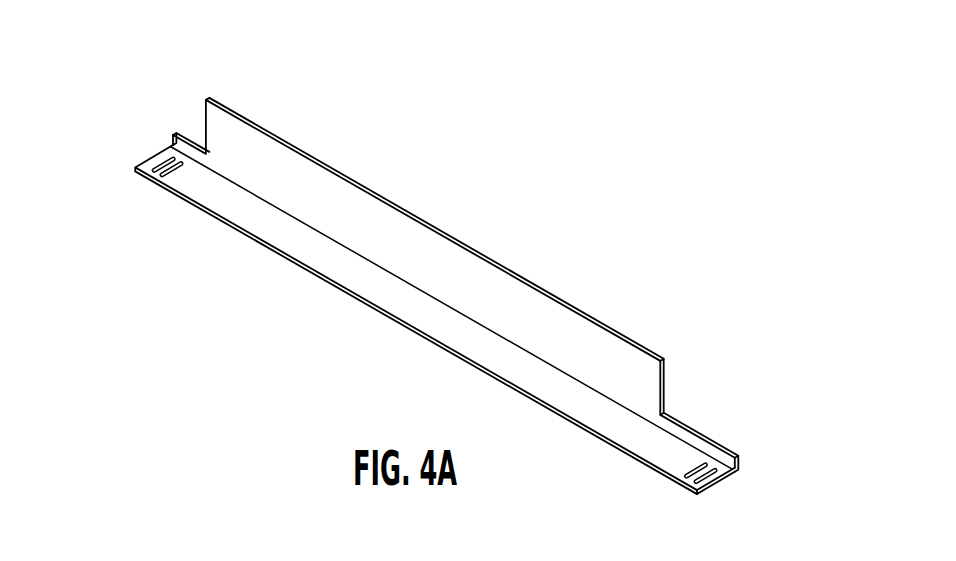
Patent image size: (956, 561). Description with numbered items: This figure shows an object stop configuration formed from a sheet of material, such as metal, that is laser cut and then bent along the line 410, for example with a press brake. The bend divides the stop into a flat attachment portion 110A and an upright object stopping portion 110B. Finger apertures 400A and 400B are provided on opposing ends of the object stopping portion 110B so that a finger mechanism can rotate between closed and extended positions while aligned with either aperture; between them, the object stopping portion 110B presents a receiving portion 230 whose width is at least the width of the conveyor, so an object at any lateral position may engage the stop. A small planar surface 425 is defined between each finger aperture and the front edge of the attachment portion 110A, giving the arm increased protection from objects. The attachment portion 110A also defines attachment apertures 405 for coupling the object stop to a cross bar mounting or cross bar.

The attachment portion 110A is at (555, 410).
The object stopping portion 110B is at (398, 208).
The receiving portion 230 is at (482, 277).
The finger aperture 400A is at (662, 383).
The finger aperture 400B is at (205, 133).
The attachment aperture 405 is at (717, 478).
The bend line 410 is at (288, 213).
The small planar surface 425 is at (180, 145).